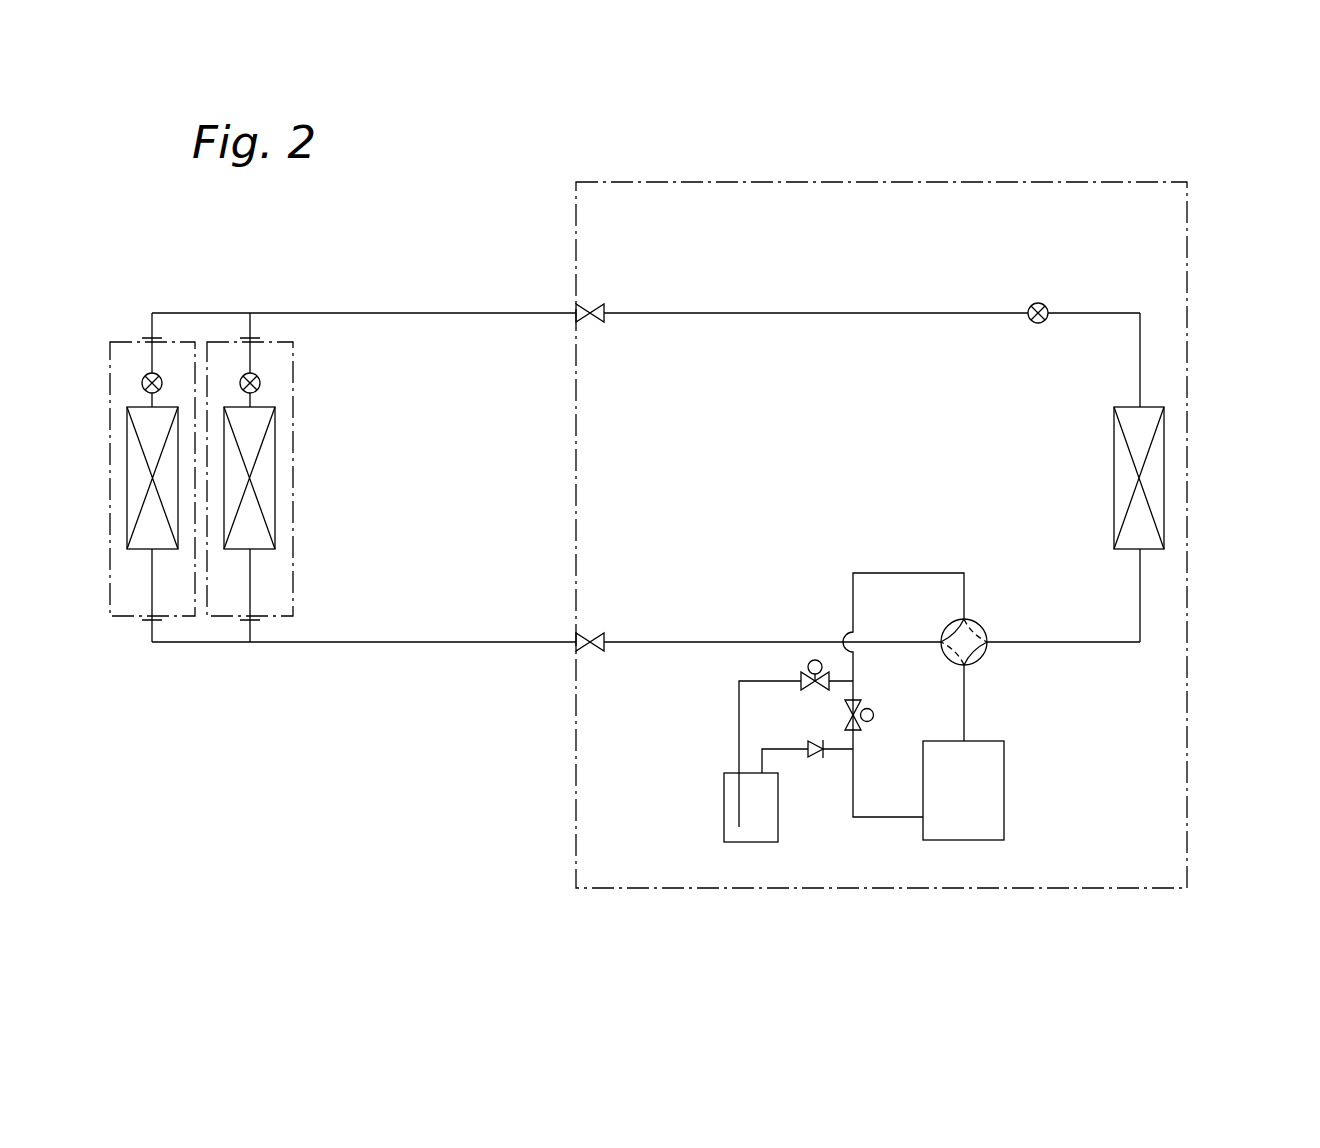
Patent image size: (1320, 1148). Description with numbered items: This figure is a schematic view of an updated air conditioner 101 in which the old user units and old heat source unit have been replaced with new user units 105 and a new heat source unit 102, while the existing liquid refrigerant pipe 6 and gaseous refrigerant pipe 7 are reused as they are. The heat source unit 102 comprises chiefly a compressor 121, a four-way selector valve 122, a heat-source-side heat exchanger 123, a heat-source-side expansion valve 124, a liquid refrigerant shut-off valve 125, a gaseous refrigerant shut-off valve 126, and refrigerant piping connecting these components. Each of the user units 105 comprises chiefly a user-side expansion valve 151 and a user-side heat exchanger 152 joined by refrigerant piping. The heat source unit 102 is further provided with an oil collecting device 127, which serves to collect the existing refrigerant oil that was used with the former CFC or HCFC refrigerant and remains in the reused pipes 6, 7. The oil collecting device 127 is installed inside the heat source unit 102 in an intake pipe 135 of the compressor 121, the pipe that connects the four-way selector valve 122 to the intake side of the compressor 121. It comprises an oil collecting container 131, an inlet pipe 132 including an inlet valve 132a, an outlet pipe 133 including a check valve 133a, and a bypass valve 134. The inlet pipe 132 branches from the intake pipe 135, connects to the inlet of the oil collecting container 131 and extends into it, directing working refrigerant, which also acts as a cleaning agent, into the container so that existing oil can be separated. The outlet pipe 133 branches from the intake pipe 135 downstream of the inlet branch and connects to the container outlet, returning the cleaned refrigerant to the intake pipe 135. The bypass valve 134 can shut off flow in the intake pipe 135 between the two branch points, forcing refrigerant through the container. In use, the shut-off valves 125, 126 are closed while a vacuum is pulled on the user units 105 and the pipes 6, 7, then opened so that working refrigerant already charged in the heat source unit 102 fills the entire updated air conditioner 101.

The liquid refrigerant pipe 6 is at (452, 312).
The gaseous refrigerant pipe 7 is at (428, 640).
The updated air conditioner 101 is at (1205, 175).
The heat source unit 102 is at (912, 182).
The user units 105 is at (178, 617).
The compressor 121 is at (1005, 812).
The four-way selector valve 122 is at (981, 621).
The heat-source-side heat exchanger 123 is at (1114, 472).
The heat-source-side expansion valve 124 is at (1040, 324).
The liquid refrigerant shut-off valve 125 is at (598, 321).
The gaseous refrigerant shut-off valve 126 is at (597, 636).
The oil collecting device 127 is at (721, 758).
The oil collecting container 131 is at (724, 822).
The inlet pipe 132 is at (777, 668).
The inlet valve 132a is at (815, 659).
The outlet pipe 133 is at (798, 764).
The check valve 133a is at (813, 742).
The bypass valve 134 is at (874, 715).
The intake pipe 135 is at (891, 573).
The user-side expansion valve 151 is at (261, 381).
The user-side heat exchanger 152 is at (277, 470).